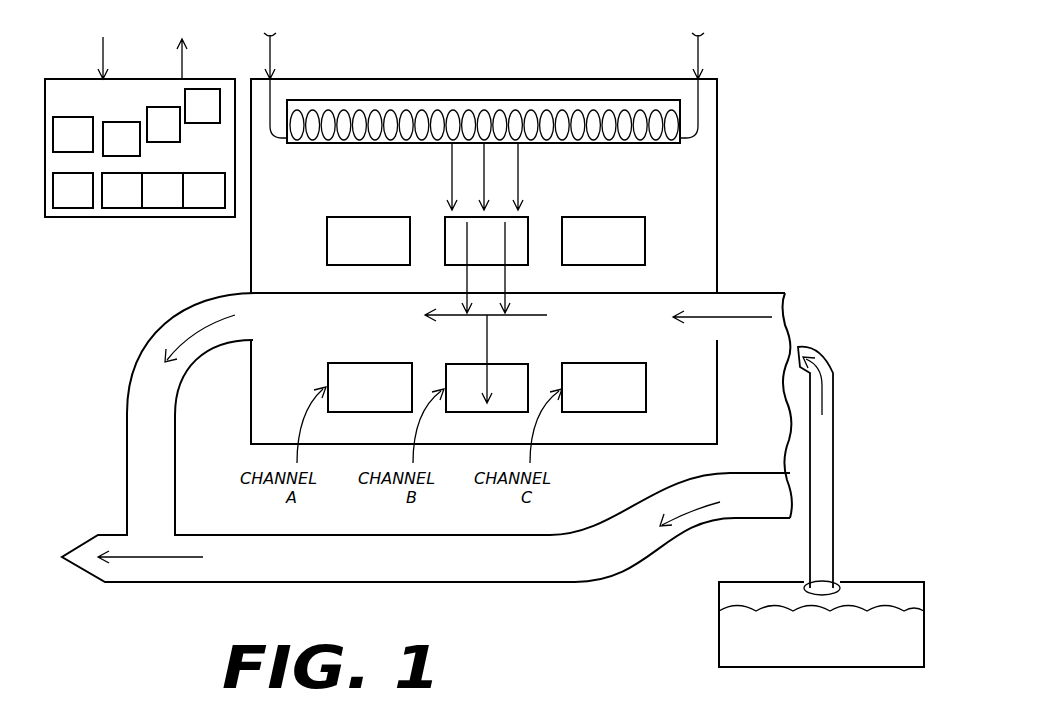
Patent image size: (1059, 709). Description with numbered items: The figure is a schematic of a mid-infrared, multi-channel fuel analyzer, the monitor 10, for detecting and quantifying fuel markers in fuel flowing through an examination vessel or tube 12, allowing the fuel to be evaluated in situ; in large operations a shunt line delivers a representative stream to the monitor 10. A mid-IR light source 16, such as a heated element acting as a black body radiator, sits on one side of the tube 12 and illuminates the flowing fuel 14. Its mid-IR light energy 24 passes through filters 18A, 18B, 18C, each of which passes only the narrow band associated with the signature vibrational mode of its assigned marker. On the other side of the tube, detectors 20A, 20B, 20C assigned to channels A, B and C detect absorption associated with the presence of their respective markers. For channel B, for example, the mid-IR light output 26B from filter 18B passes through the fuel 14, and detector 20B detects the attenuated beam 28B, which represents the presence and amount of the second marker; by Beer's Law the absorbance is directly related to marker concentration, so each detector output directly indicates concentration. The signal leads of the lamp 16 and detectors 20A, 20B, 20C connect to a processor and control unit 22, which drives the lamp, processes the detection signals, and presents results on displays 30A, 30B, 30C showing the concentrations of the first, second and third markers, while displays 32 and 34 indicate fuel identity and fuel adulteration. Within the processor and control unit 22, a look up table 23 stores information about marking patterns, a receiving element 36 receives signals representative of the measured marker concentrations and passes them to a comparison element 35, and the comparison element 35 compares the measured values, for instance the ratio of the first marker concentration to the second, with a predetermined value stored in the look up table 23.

The monitor 10 is at (462, 79).
The examination vessel or tube 12 is at (745, 293).
The flowing fuel 14 is at (448, 315).
The mid-IR light source 16 is at (501, 96).
The filter 18A is at (382, 251).
The filter 18B is at (445, 225).
The filter 18C is at (617, 251).
The detector 20A is at (384, 396).
The detector 20B is at (500, 375).
The detector 20C is at (618, 396).
The processor and control unit 22 is at (86, 105).
The look up table 23 is at (85, 145).
The mid-IR light energy 24 is at (452, 163).
The mid-IR light output 26B is at (467, 274).
The attenuated beam 28B is at (487, 330).
The display 30A is at (120, 209).
The display 30B is at (175, 209).
The display 30C is at (220, 209).
The display 32 is at (175, 135).
The display 34 is at (214, 117).
The comparison element 35 is at (85, 201).
The receiving element 36 is at (133, 150).